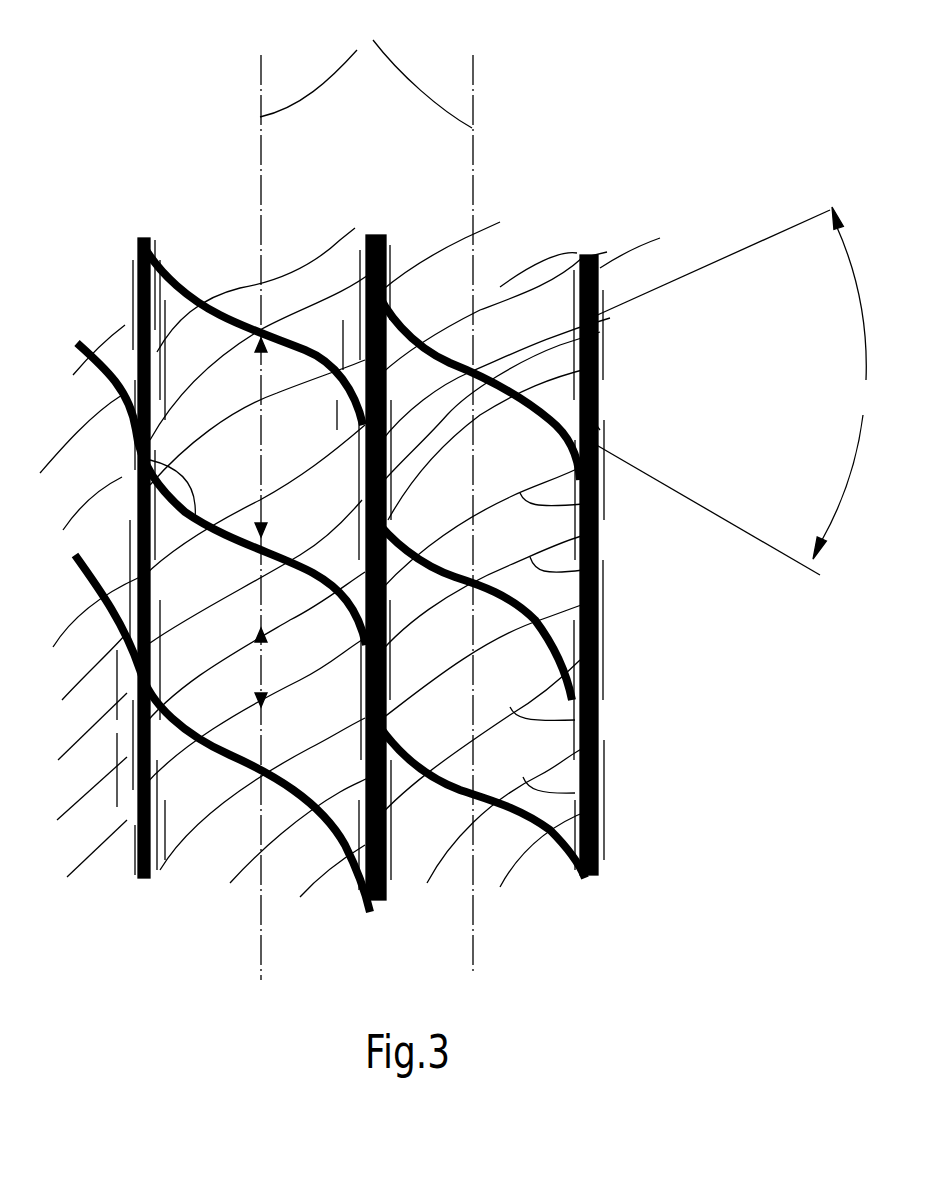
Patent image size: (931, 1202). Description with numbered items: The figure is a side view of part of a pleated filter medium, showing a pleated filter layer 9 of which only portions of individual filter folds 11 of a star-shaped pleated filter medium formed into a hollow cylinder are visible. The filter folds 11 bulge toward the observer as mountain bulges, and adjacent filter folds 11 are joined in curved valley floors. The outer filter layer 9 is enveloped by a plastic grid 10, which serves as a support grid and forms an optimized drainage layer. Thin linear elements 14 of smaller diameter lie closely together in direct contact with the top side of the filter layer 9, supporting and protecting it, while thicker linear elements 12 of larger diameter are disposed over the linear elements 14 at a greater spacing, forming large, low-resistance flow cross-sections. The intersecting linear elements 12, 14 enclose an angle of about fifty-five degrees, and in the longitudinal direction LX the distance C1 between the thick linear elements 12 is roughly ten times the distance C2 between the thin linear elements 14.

The filter layer 9 is at (513, 275).
The plastic grid 10 is at (593, 420).
The filter folds 11 is at (77, 247).
The linear elements 12 is at (180, 292).
The linear elements 14 is at (560, 282).
The longitudinal direction LX is at (366, 67).
The distance C1 is at (263, 393).
The distance C2 is at (270, 663).